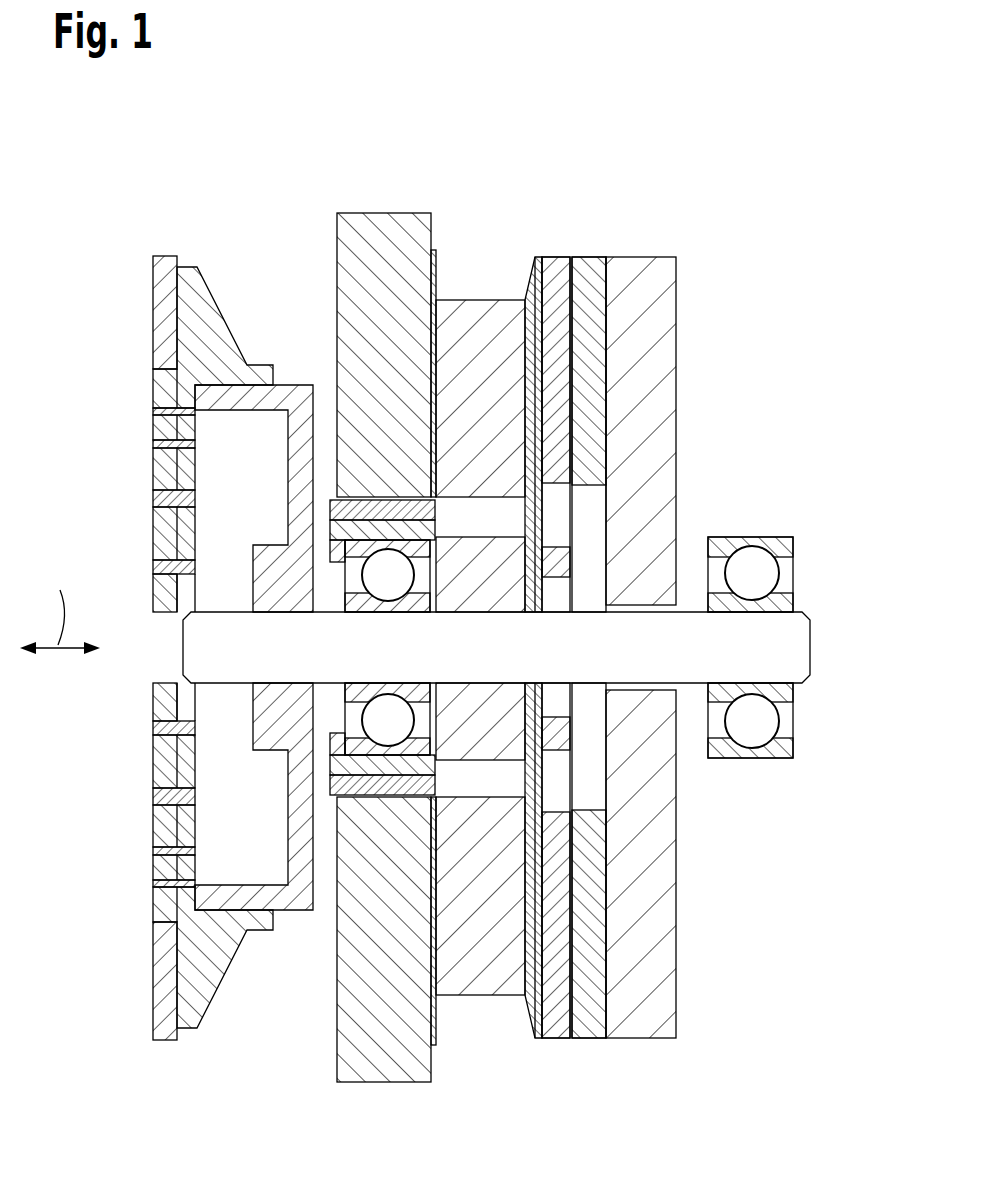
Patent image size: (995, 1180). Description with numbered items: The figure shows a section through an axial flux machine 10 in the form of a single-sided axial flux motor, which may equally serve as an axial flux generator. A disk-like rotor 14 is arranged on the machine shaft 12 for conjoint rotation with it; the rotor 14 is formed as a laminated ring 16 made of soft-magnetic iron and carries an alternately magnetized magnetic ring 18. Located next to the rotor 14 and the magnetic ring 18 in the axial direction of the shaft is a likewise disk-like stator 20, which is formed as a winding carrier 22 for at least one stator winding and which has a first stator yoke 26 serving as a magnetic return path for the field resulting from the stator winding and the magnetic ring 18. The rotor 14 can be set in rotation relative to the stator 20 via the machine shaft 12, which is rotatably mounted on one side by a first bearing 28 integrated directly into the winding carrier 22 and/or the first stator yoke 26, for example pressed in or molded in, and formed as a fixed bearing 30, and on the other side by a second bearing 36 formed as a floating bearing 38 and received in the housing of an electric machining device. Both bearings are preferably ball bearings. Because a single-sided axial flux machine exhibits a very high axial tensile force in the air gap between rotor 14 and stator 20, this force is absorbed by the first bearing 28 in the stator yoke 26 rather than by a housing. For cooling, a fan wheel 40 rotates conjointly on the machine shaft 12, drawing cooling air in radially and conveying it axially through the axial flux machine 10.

The axial flux machine 10 is at (755, 212).
The machine shaft 12 is at (785, 643).
The rotor 14 is at (615, 245).
The laminated ring 16 is at (662, 310).
The magnetic ring 18 is at (637, 1020).
The stator 20 is at (423, 160).
The winding carrier 22 is at (483, 320).
The first stator yoke 26 is at (362, 212).
The first bearing 28 is at (345, 572).
The fixed bearing 30 is at (233, 647).
The second bearing 36 is at (776, 545).
The floating bearing 38 is at (750, 647).
The fan wheel 40 is at (158, 298).